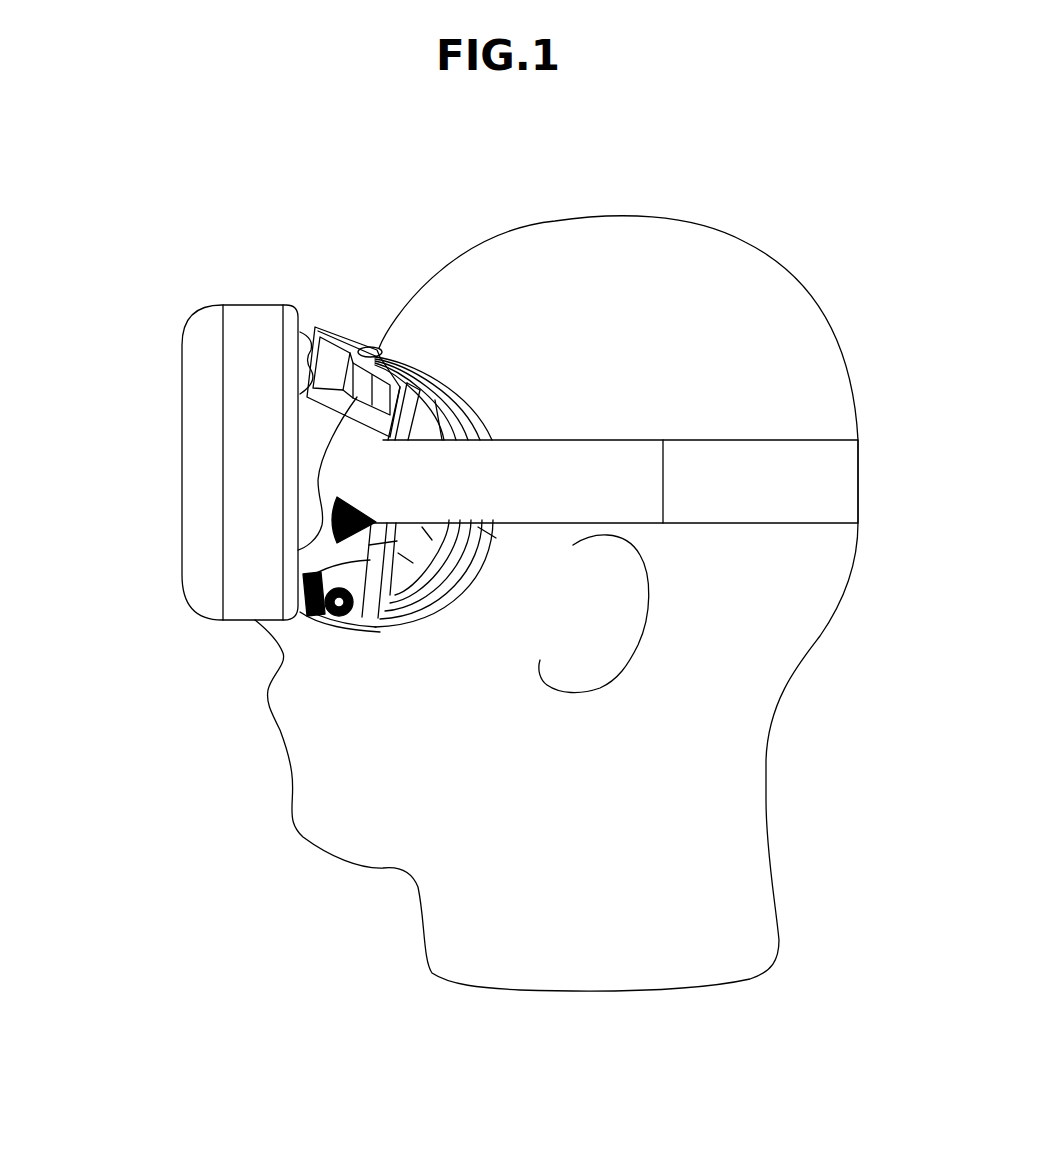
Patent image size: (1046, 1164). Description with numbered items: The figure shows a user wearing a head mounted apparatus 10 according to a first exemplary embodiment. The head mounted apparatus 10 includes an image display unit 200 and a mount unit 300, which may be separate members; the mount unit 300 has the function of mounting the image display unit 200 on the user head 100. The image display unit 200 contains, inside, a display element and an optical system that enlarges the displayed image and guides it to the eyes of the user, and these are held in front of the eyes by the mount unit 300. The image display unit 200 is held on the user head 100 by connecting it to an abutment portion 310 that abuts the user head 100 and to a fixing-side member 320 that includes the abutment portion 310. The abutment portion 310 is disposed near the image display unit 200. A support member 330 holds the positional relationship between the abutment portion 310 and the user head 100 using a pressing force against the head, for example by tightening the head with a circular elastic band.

The head mounted apparatus 10 is at (147, 418).
The user head 100 is at (858, 396).
The image display unit 200 is at (300, 210).
The mount unit 300 is at (866, 210).
The abutment portion 310 is at (379, 348).
The fixing-side member 320 is at (398, 622).
The support member 330 is at (850, 482).